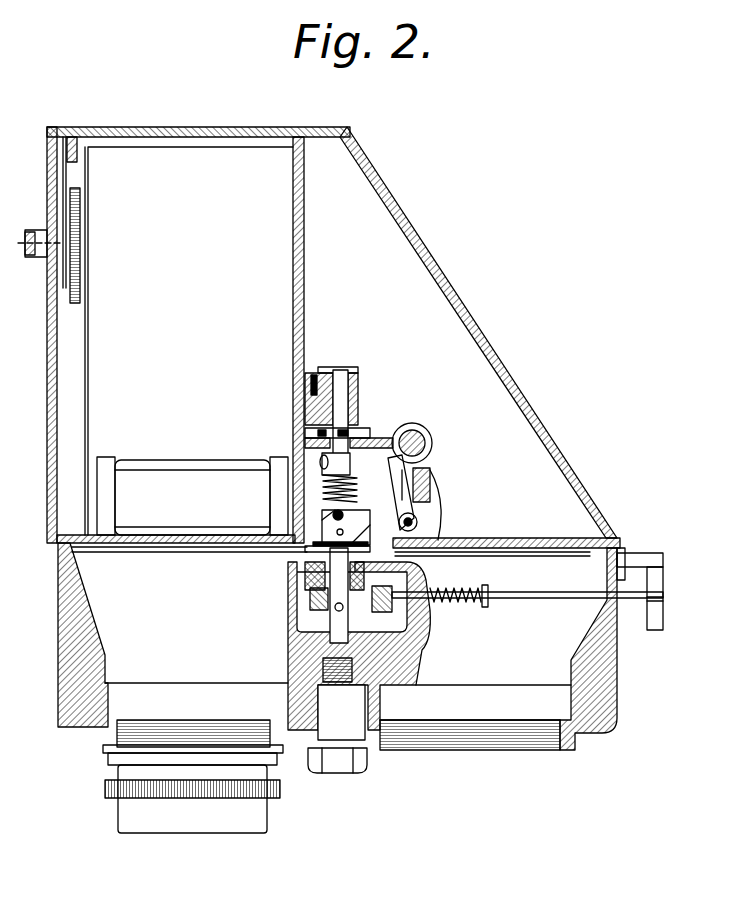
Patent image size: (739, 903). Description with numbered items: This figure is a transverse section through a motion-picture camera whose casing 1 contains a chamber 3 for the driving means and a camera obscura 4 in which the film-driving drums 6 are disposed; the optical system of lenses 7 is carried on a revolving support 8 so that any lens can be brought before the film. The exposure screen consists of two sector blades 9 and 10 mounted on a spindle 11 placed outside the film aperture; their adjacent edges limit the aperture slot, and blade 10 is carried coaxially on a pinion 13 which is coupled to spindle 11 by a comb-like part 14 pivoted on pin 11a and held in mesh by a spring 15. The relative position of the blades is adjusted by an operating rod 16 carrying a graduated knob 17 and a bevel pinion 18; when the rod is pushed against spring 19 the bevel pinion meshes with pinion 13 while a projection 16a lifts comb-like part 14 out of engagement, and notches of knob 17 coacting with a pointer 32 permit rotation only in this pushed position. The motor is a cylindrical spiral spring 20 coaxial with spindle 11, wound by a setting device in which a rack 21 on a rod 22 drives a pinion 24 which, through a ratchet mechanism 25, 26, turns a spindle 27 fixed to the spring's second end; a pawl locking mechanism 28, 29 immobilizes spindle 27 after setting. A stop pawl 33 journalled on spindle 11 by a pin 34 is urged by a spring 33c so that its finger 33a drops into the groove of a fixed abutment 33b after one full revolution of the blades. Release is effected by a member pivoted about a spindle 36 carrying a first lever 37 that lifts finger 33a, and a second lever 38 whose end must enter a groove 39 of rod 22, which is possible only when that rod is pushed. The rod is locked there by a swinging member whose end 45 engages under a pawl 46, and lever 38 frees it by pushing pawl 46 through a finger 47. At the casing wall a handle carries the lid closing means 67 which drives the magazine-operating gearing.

The casing 1 is at (613, 665).
The chamber 3 is at (365, 205).
The camera obscura 4 is at (175, 137).
The drums 6 is at (100, 495).
The lenses 7 is at (250, 128).
The revolving support 8 is at (598, 735).
The blade 9 is at (143, 525).
The blade 10 is at (140, 553).
The spindle 11 is at (288, 642).
The pin 11a is at (300, 612).
The pinion 13 is at (296, 575).
The comb-like part 14 is at (310, 598).
The spring 15 is at (365, 740).
The operating rod 16 is at (562, 600).
The projection 16a is at (377, 617).
The operating knob 17 is at (655, 630).
The bevel pinion 18 is at (387, 607).
The spring 19 is at (486, 605).
The cylindrical spiral spring 20 is at (323, 478).
The rack 21 is at (385, 440).
The rod 22 is at (430, 438).
The pinion 24 is at (322, 437).
The ratchet mechanism 25 is at (390, 430).
The ratchet mechanism 26 is at (322, 433).
The spindle 27 is at (352, 428).
The pawl locking mechanism 28 is at (338, 372).
The pawl locking mechanism 29 is at (298, 342).
The pointer 32 is at (640, 555).
The stop pawl 33 is at (345, 508).
The finger 33a is at (437, 490).
The fixed abutment 33b is at (398, 550).
The spring 33c is at (330, 530).
The pin 34 is at (355, 520).
The spindle 36 is at (432, 508).
The first lever 37 is at (418, 525).
The second lever 38 is at (437, 462).
The groove 39 is at (520, 410).
The end 45 is at (440, 468).
The pawl 46 is at (440, 462).
The finger 47 is at (363, 460).
The lid closing means 67 is at (70, 205).